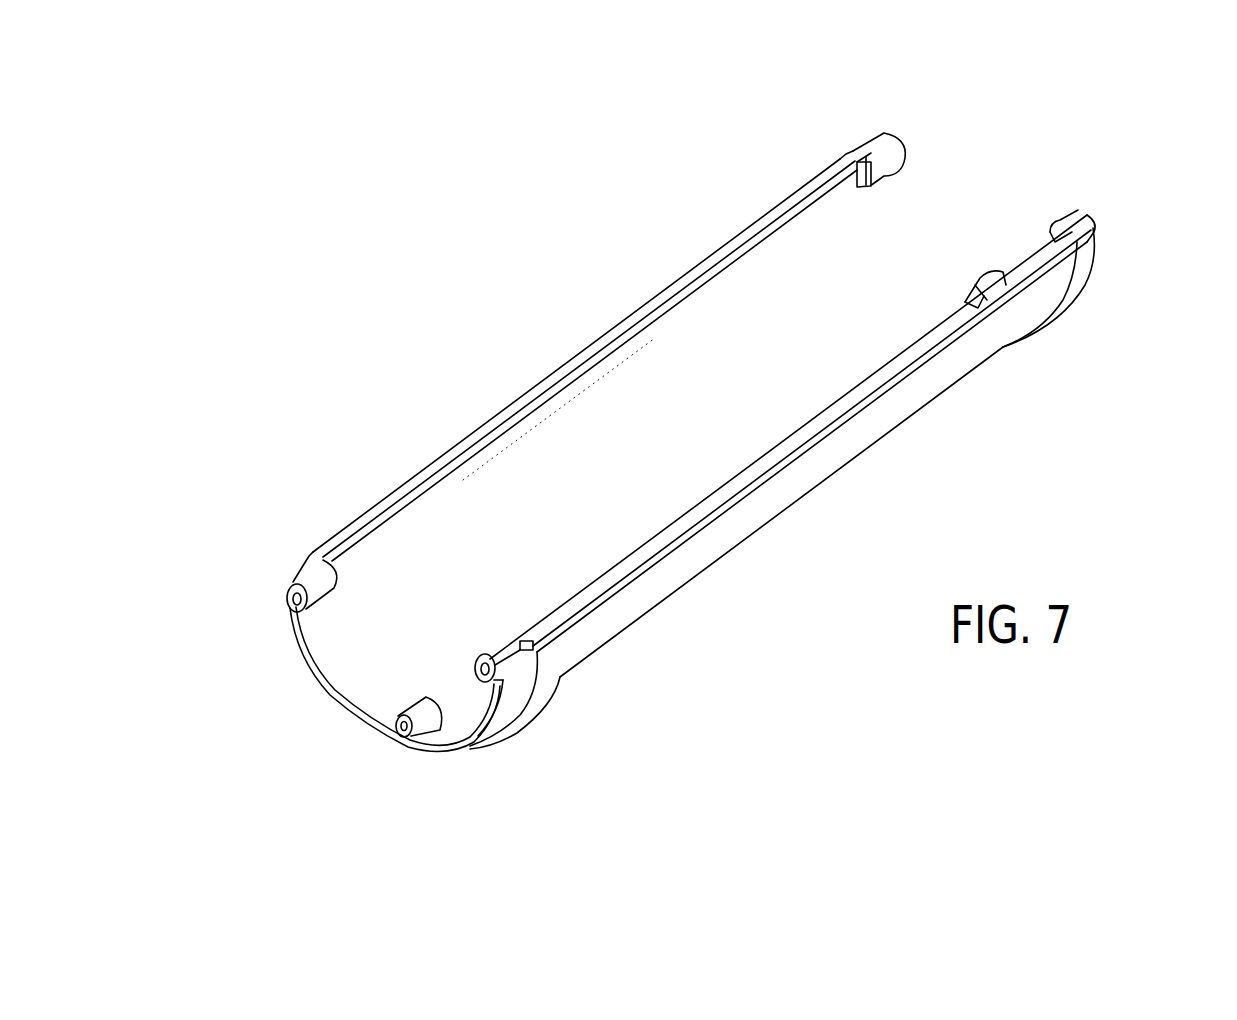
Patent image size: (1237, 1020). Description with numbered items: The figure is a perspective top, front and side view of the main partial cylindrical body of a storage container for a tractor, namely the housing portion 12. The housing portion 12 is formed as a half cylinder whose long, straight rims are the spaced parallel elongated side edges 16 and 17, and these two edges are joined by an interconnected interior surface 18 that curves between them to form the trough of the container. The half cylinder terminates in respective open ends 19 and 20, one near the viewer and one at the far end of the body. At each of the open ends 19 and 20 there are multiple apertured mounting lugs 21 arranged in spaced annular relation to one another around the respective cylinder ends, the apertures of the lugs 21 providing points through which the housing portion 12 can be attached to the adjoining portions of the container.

The housing portion 12 is at (595, 268).
The elongated side edge 16 is at (486, 431).
The elongated side edge 17 is at (800, 438).
The interior surface 18 is at (754, 301).
The open end 19 is at (328, 678).
The open end 20 is at (983, 275).
The mounting lug 21 is at (905, 147).